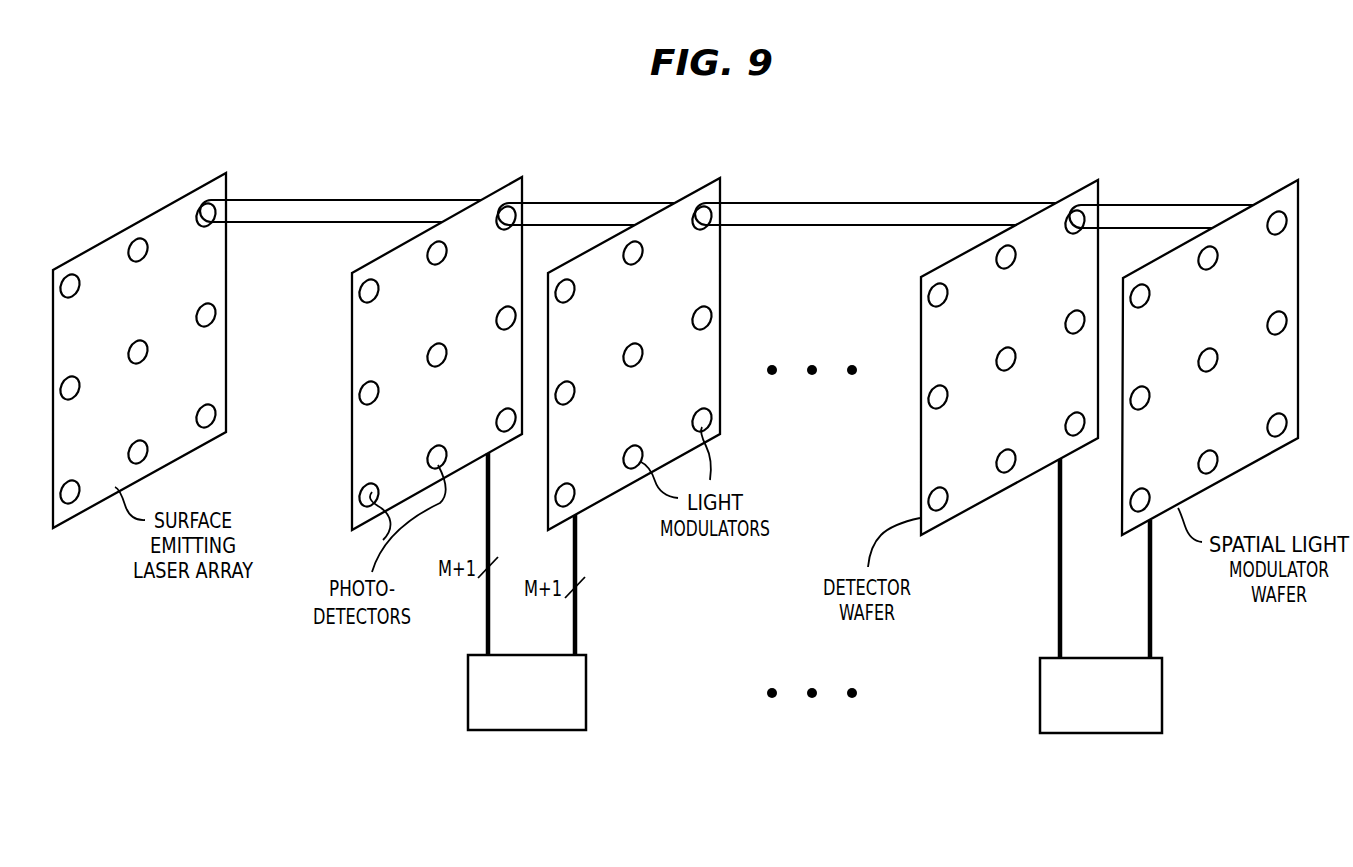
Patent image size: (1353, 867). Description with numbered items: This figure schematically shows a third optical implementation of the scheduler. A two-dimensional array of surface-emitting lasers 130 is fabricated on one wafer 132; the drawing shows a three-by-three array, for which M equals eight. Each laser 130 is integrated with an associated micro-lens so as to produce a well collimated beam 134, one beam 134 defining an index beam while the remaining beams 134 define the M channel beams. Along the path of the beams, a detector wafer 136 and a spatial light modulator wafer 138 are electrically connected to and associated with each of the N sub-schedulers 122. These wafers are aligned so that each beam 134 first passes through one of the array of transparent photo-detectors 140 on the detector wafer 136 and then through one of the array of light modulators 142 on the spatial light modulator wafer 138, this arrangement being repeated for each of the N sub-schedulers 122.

The sub-scheduler 122 is at (552, 730).
The surface-emitting laser 130 is at (130, 240).
The wafer 132 is at (222, 177).
The collimated beam 134 is at (368, 200).
The detector wafer 136 is at (518, 178).
The spatial light modulator wafer 138 is at (717, 178).
The transparent photo-detector 140 is at (433, 251).
The light modulator 142 is at (629, 251).